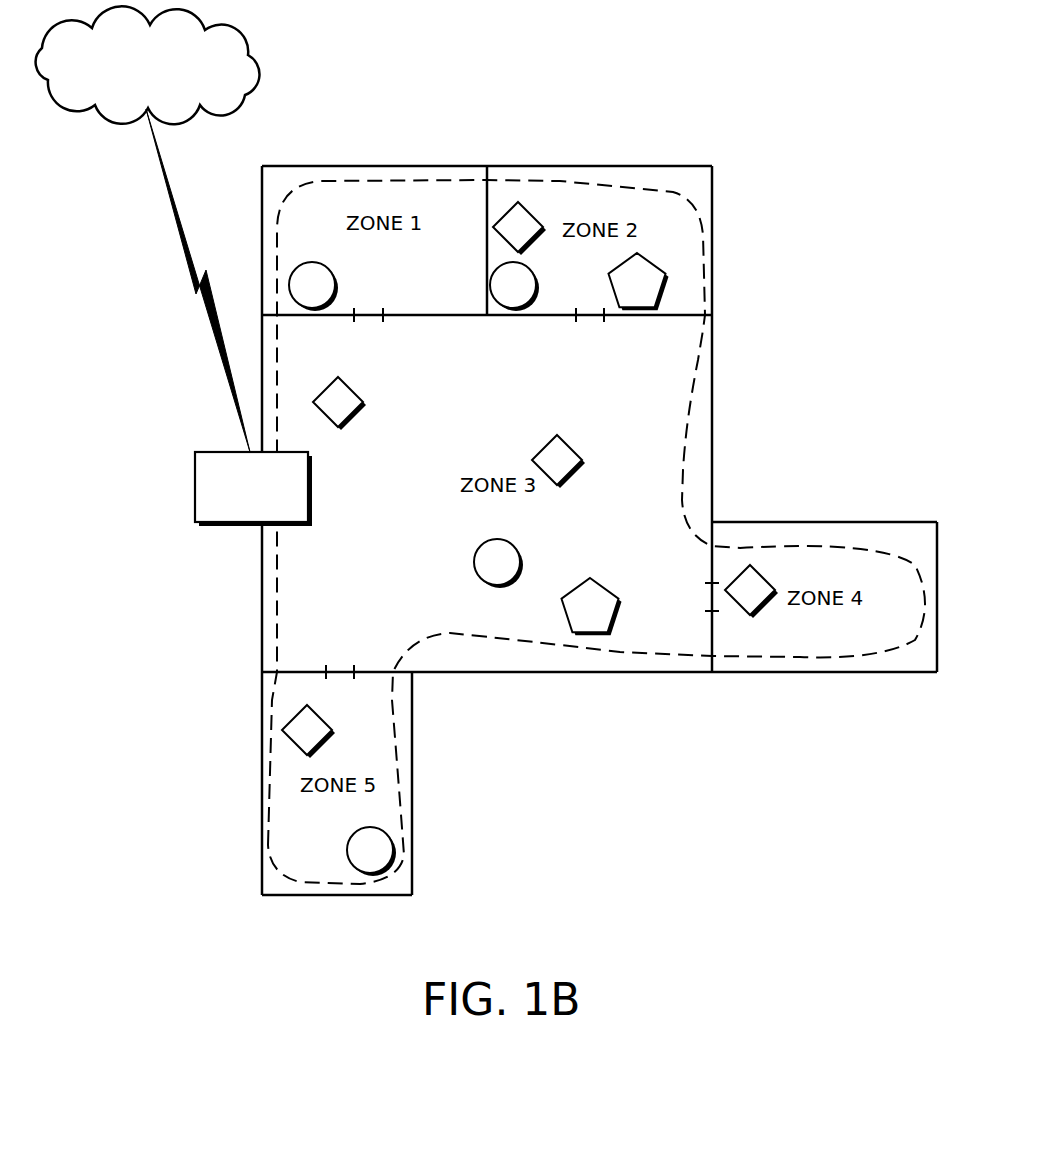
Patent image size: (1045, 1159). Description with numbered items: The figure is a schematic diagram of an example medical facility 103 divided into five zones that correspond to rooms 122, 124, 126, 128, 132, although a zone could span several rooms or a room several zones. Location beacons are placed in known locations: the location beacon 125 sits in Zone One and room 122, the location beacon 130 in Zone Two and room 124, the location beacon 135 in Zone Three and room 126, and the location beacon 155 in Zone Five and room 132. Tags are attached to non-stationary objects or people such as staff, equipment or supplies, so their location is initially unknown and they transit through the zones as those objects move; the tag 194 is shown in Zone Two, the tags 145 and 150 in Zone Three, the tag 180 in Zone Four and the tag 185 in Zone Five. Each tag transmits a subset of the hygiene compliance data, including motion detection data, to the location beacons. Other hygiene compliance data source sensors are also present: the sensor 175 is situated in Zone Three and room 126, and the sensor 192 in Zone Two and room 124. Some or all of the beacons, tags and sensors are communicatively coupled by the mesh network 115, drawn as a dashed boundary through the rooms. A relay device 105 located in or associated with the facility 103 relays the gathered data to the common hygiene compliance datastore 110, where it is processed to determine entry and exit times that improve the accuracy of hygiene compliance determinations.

The medical facility 103 is at (898, 110).
The relay device 105 is at (238, 452).
The common hygiene compliance datastore 110 is at (222, 27).
The mesh network 115 is at (693, 203).
The room 122 is at (288, 165).
The room 124 is at (637, 165).
The location beacon 125 is at (335, 278).
The room 126 is at (714, 408).
The room 128 is at (826, 521).
The location beacon 130 is at (536, 278).
The room 132 is at (412, 765).
The location beacon 135 is at (476, 553).
The tag 145 is at (345, 384).
The tag 150 is at (564, 442).
The location beacon 155 is at (348, 842).
The hygiene compliance data source sensor 175 is at (594, 590).
The tag 180 is at (757, 572).
The tag 185 is at (314, 712).
The hygiene compliance data source sensor 192 is at (641, 262).
The tag 194 is at (530, 214).